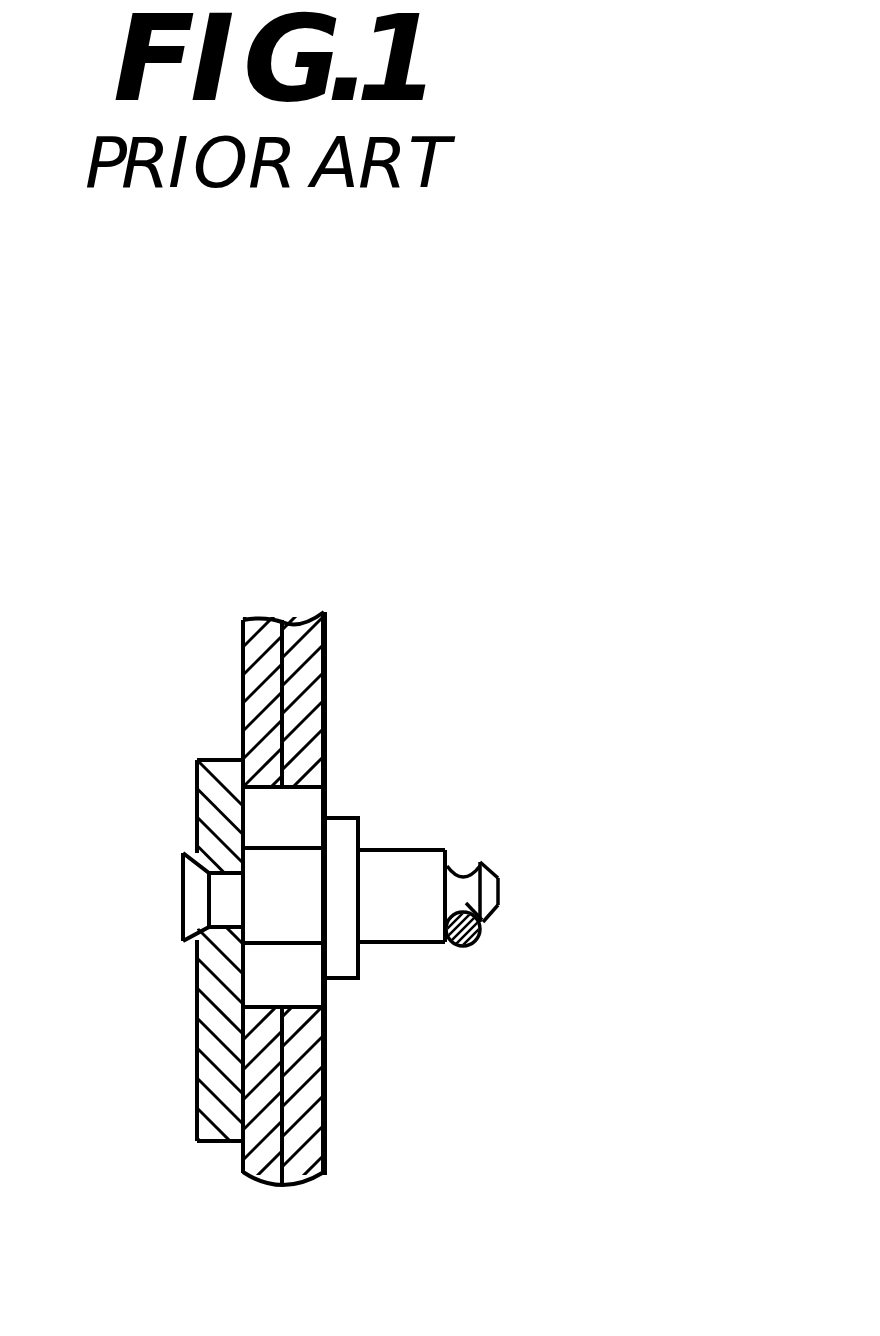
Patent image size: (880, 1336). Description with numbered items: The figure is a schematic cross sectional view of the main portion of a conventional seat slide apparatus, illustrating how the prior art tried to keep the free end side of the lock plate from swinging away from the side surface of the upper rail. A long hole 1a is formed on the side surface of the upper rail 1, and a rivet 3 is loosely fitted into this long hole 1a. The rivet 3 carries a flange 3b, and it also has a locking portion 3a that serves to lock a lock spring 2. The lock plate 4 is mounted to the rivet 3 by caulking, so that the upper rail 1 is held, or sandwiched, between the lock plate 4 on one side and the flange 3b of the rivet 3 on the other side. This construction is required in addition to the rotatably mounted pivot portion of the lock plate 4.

The upper rail 1 is at (324, 670).
The long hole 1a is at (298, 787).
The lock spring 2 is at (463, 948).
The rivet 3 is at (499, 891).
The locking portion 3a is at (499, 915).
The flange 3b is at (338, 980).
The lock plate 4 is at (197, 1040).